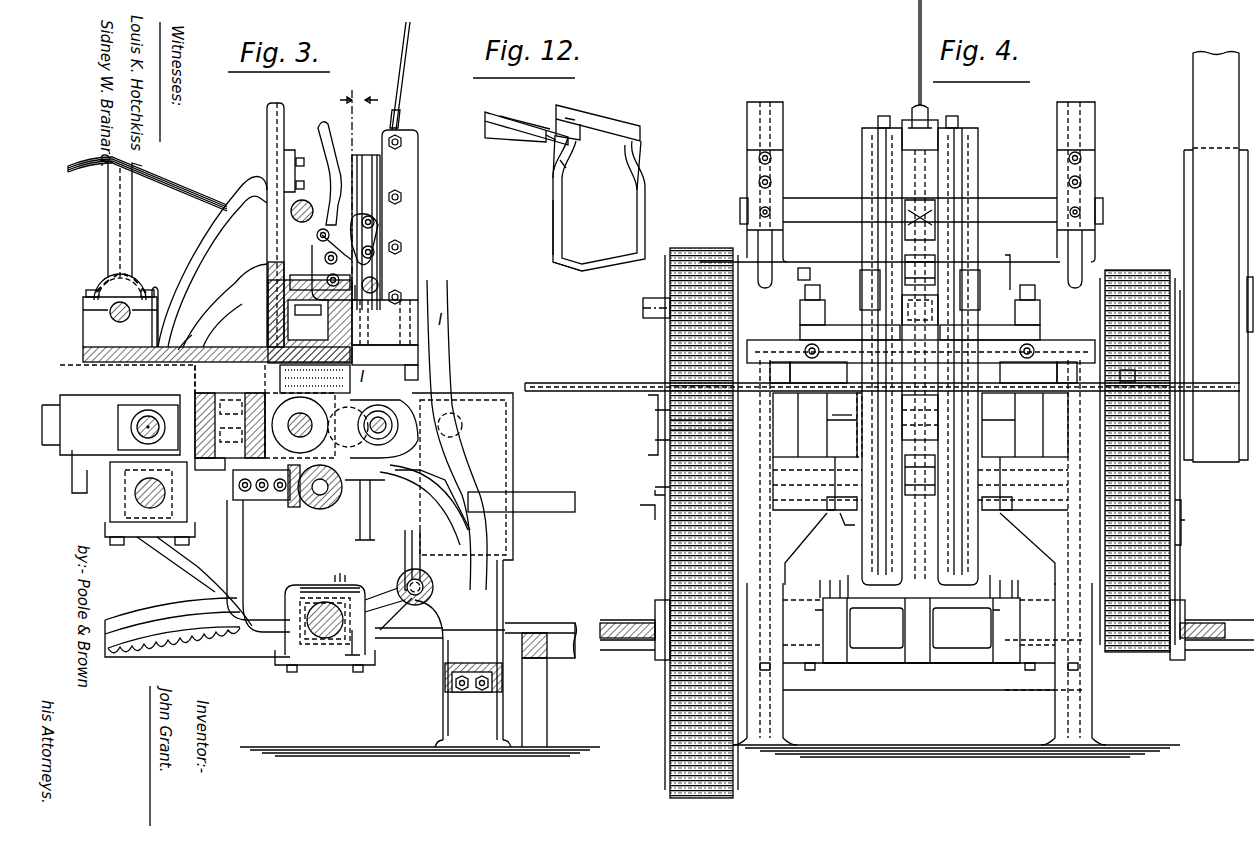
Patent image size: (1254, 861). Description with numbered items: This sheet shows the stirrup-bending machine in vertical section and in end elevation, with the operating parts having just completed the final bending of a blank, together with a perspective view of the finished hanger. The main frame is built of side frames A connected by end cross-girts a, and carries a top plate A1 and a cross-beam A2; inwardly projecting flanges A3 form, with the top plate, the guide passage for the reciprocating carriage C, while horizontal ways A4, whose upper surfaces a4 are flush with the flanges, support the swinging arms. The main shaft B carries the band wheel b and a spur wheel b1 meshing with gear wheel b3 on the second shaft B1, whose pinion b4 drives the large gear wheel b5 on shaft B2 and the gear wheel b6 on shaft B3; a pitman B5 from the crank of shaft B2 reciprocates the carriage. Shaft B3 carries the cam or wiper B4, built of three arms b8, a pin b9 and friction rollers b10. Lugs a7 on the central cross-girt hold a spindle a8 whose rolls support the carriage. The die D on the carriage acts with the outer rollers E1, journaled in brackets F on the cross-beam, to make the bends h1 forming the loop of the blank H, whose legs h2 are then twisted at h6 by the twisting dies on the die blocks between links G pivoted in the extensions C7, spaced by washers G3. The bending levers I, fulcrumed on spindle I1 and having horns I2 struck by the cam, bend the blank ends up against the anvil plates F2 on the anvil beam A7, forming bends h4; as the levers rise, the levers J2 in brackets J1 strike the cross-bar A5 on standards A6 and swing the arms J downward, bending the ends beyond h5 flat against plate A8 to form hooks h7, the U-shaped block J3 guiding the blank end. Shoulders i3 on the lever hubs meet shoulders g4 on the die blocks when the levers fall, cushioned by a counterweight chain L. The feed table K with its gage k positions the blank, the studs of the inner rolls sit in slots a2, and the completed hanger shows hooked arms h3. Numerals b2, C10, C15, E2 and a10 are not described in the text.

In FIG. 3, the side frames A is at (304, 462).
In FIG. 4, the side frames A is at (1058, 714).
In FIG. 3, the top plate A1 is at (83, 352).
In FIG. 4, the top plate A1 is at (1001, 261).
In FIG. 4, the cross-beam A2 is at (880, 294).
In FIG. 3, the inwardly projecting flanges A3 is at (232, 498).
In FIG. 4, the inwardly projecting flanges A3 is at (920, 521).
In FIG. 3, the horizontal flanges or ways A4 is at (521, 493).
In FIG. 4, the horizontal flanges or ways A4 is at (920, 489).
In FIG. 3, the cross-bar A5 is at (291, 212).
In FIG. 4, the cross-bar A5 is at (822, 210).
In FIG. 3, the standards A6 is at (278, 225).
In FIG. 4, the standards A6 is at (772, 108).
In FIG. 4, the anvil beam A7 is at (920, 305).
In FIG. 3, the plate on anvil beam A8 is at (209, 305).
In FIG. 4, the plate on anvil beam A8 is at (929, 375).
In FIG. 3, the main shaft B is at (110, 310).
In FIG. 4, the main shaft B is at (643, 308).
In FIG. 3, the second transverse shaft B1 is at (110, 502).
In FIG. 4, the second transverse shaft B1 is at (1193, 488).
In FIG. 4, the transverse shaft B2 is at (648, 408).
In FIG. 3, the transverse shaft B3 is at (322, 600).
In FIG. 4, the transverse shaft B3 is at (655, 612).
In FIG. 4, the cam or wiper B4 is at (919, 625).
In FIG. 3, the pitman B5 is at (118, 410).
In FIG. 3, the band wheel b is at (108, 168).
In FIG. 4, the band wheel b is at (1192, 216).
In FIG. 3, the spur wheel b1 is at (448, 596).
In FIG. 3, the gear b2 is at (105, 285).
In FIG. 4, the gear b2 is at (1128, 270).
In FIG. 3, the gear wheel b3 is at (197, 622).
In FIG. 4, the gear wheel b3 is at (1175, 535).
In FIG. 4, the pinion b4 is at (672, 447).
In FIG. 4, the large gear wheel b5 is at (706, 262).
In FIG. 4, the gear wheel b6 is at (670, 495).
In FIG. 4, the parallel arms b8 is at (913, 625).
In FIG. 3, the pin b9 is at (389, 596).
In FIG. 4, the pin b9 is at (922, 571).
In FIG. 4, the friction rollers b10 is at (916, 574).
In FIG. 3, the reciprocating carriage C is at (202, 411).
In FIG. 4, the reciprocating carriage C is at (920, 425).
In FIG. 3, the extensions C7 is at (222, 346).
In FIG. 3, the carriage part C10 is at (210, 470).
In FIG. 3, the carriage part C15 is at (150, 410).
In FIG. 3, the die or former D is at (310, 336).
In FIG. 4, the die or former D is at (959, 287).
In FIG. 3, the outer pair of rollers E1 is at (460, 378).
In FIG. 4, the outer pair of rollers E1 is at (808, 373).
In FIG. 4, the slide E2 is at (1038, 373).
In FIG. 4, the brackets F is at (921, 333).
In FIG. 3, the anvil plates F2 is at (420, 305).
In FIG. 3, the links G is at (300, 425).
In FIG. 4, the links G is at (910, 422).
In FIG. 4, the spacing rolls or washers G3 is at (921, 405).
In FIG. 3, the shoulders g4 is at (348, 424).
In FIG. 12, the metal blank or strap H is at (600, 262).
In FIG. 12, the right angled bends h1 is at (485, 127).
In FIG. 12, the sides or legs h2 is at (562, 222).
In FIG. 12, the hooked arms h3 is at (530, 117).
In FIG. 12, the bends h4 is at (545, 138).
In FIG. 12, the final bends h5 is at (497, 113).
In FIG. 12, the quarter twist h6 is at (558, 172).
In FIG. 3, the hooks h7 is at (318, 300).
In FIG. 12, the hooks h7 is at (575, 117).
In FIG. 4, the bending levers I is at (920, 350).
In FIG. 3, the horizontal spindle I1 is at (384, 429).
In FIG. 3, the horns I2 is at (422, 525).
In FIG. 3, the shoulders i3 is at (425, 500).
In FIG. 3, the bending arms J is at (378, 275).
In FIG. 3, the brackets J1 is at (356, 207).
In FIG. 4, the brackets J1 is at (855, 248).
In FIG. 4, the levers J2 is at (884, 115).
In FIG. 4, the U-shaped block J3 is at (853, 283).
In FIG. 4, the feed table K is at (614, 382).
In FIG. 4, the gage k is at (1118, 375).
In FIG. 3, the rope or chain L is at (398, 52).
In FIG. 4, the rope or chain L is at (918, 68).
In FIG. 3, the end cross-girts a is at (472, 668).
In FIG. 4, the end cross-girts a is at (921, 671).
In FIG. 3, the transverse slots a2 is at (262, 500).
In FIG. 3, the upper horizontal surfaces of the ways a4 is at (369, 510).
In FIG. 4, the upper horizontal surfaces of the ways a4 is at (919, 484).
In FIG. 4, the forwardly projecting lugs a7 is at (920, 493).
In FIG. 3, the spindle a8 is at (311, 499).
In FIG. 3, the hole a10 is at (462, 425).